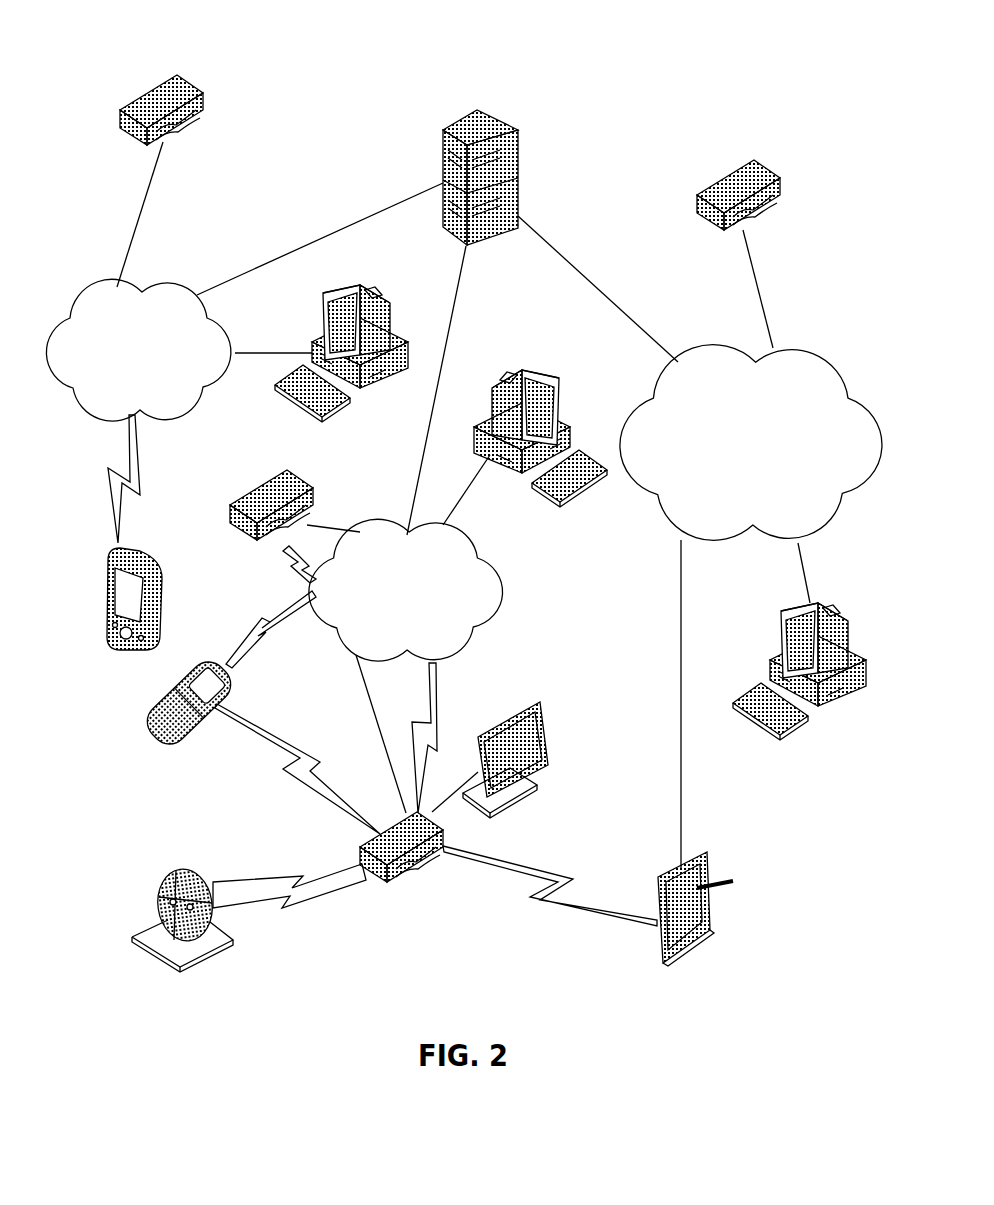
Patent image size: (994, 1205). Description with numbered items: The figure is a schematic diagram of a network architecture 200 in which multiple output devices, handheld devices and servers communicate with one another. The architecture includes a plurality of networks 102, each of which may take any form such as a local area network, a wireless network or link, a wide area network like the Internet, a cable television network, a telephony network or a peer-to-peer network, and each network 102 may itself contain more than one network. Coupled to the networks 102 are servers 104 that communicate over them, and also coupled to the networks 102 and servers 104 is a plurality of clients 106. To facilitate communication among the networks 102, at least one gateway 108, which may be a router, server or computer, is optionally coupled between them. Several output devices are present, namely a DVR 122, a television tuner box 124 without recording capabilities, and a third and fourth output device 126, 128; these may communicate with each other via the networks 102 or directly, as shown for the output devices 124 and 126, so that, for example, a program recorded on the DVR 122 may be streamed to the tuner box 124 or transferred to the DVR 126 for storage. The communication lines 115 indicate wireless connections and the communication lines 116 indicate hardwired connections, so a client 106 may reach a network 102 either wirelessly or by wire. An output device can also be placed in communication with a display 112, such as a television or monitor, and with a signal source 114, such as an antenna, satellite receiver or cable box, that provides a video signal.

The network architecture 200 is at (600, 114).
The network 102 is at (96, 290).
The server 104 is at (358, 285).
The client 106 is at (108, 546).
The gateway 108 is at (444, 134).
The display 112 is at (548, 722).
The signal source 114 is at (172, 867).
The communication lines (wireless connections) 115 is at (141, 495).
The communication lines (hardwired connections) 116 is at (338, 228).
The DVR 122 is at (400, 876).
The television tuner box 124 is at (248, 537).
The third output device 126 is at (130, 132).
The fourth output device 128 is at (700, 217).